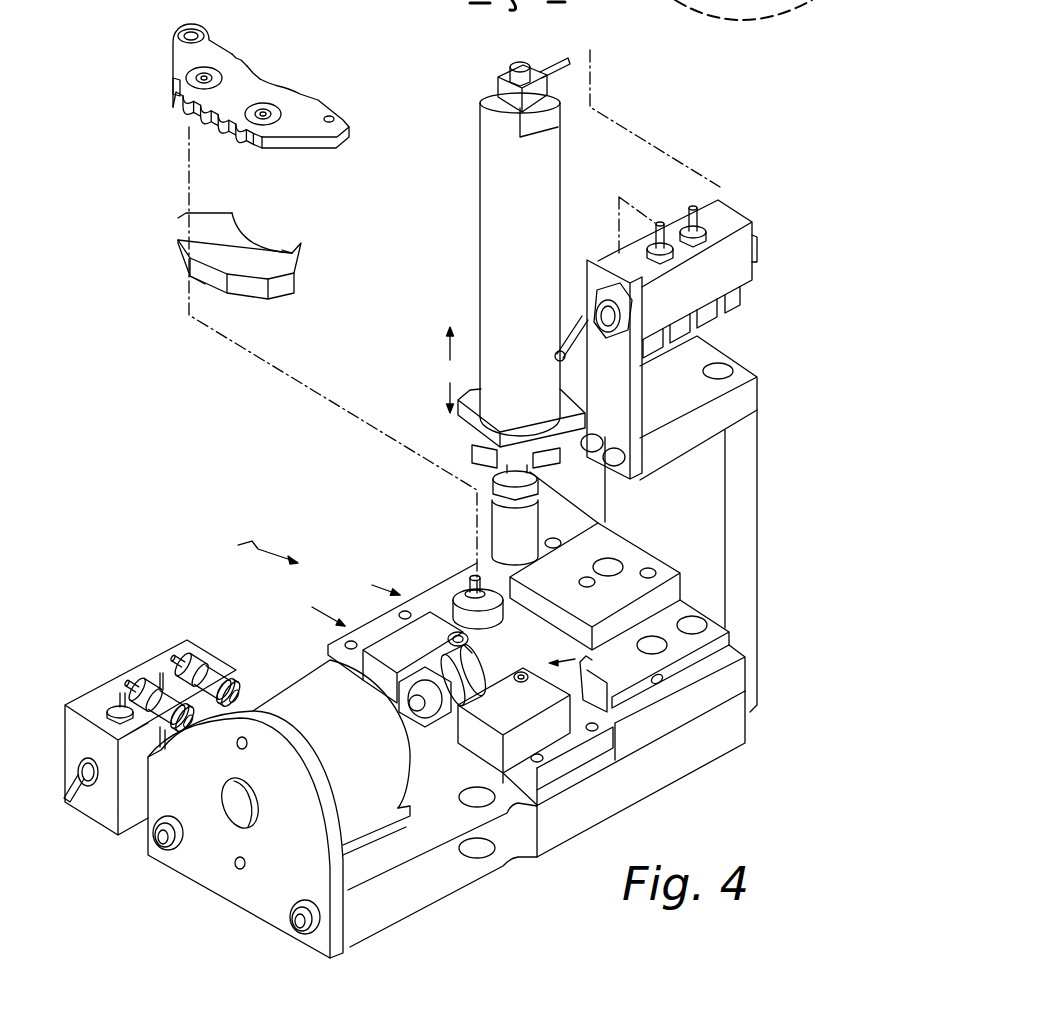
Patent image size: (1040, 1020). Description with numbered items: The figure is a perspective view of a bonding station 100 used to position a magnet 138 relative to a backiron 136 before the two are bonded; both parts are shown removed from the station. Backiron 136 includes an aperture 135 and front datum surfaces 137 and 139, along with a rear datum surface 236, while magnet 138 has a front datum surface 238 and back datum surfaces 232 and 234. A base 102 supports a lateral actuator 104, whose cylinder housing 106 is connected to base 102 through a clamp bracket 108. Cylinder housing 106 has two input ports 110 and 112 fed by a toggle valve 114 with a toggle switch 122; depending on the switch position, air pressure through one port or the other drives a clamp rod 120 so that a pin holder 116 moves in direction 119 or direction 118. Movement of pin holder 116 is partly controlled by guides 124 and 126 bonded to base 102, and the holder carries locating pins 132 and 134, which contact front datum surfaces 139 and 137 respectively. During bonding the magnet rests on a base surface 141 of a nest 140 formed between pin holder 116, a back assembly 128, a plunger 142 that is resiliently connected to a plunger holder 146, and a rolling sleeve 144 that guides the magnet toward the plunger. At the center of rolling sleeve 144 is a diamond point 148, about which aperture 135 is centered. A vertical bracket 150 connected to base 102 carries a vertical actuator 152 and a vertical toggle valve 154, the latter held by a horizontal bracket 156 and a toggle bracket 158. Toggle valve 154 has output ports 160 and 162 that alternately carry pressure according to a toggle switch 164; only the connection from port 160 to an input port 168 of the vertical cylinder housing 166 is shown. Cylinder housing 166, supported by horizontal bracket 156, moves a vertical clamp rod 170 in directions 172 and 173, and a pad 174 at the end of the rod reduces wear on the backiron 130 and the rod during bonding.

The bonding station 100 is at (250, 551).
The base 102 is at (640, 777).
The lateral actuator 104 is at (432, 823).
The cylinder housing 106 is at (358, 813).
The clamp bracket 108 is at (252, 897).
The input port 110 is at (143, 677).
The input port 112 is at (213, 640).
The toggle valve 114 is at (93, 807).
The pin holder 116 is at (505, 715).
The direction 118 is at (309, 616).
The direction 119 is at (371, 590).
The clamp rod 120 is at (373, 680).
The toggle switch 122 is at (67, 777).
The guide 124 is at (363, 622).
The guide 126 is at (570, 751).
The back assembly 128 is at (608, 600).
The backiron 130 is at (448, 717).
The locating pin 132 is at (518, 682).
The locating pin 134 is at (463, 607).
The aperture 135 is at (190, 30).
The backiron 136 is at (305, 110).
The front datum surface 137 is at (172, 100).
The magnet 138 is at (280, 267).
The front datum surface 139 is at (240, 143).
The nest 140 is at (575, 659).
The base surface 141 is at (525, 663).
The plunger 142 is at (620, 710).
The rolling sleeve 144 is at (457, 630).
The plunger holder 146 is at (717, 645).
The diamond point 148 is at (468, 590).
The vertical bracket 150 is at (740, 473).
The vertical actuator 152 is at (470, 193).
The vertical toggle valve 154 is at (737, 277).
The horizontal bracket 156 is at (748, 398).
The toggle bracket 158 is at (610, 397).
The output port 160 is at (698, 217).
The output port 162 is at (658, 220).
The toggle switch 164 is at (560, 353).
The vertical cylinder housing 166 is at (505, 273).
The input port 168 is at (545, 67).
The vertical clamp rod 170 is at (545, 459).
The direction 172 is at (443, 340).
The direction 173 is at (445, 395).
The pad 174 is at (520, 520).
The back datum surface 232 is at (236, 213).
The back datum surface 234 is at (283, 82).
The rear datum surface 236 is at (238, 51).
The front datum surface 238 is at (207, 277).